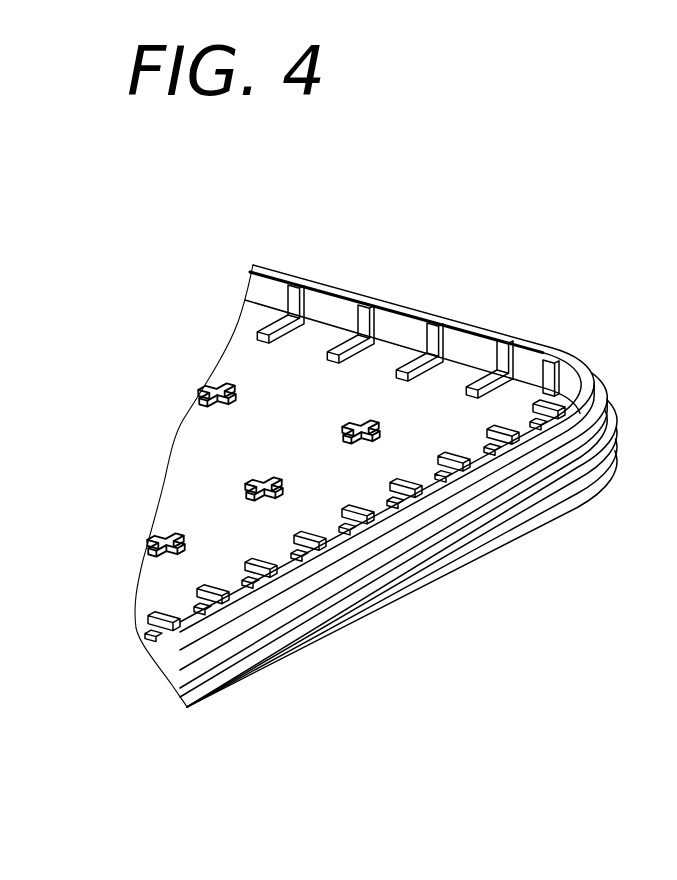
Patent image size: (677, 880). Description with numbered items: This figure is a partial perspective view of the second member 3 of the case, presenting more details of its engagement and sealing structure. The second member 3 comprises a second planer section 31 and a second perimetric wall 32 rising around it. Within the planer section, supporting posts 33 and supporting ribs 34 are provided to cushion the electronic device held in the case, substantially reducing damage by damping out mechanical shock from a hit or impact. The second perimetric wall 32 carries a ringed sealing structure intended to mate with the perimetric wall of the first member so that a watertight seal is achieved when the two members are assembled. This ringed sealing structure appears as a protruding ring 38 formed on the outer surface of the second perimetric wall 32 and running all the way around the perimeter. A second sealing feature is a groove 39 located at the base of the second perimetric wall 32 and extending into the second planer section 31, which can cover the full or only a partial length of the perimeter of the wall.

The second member 3 is at (452, 662).
The second planer section 31 is at (207, 445).
The second perimetric wall 32 is at (513, 335).
The supporting posts 33 is at (217, 387).
The supporting ribs 34 is at (364, 303).
The protruding ring 38 is at (517, 463).
The groove 39 is at (600, 402).